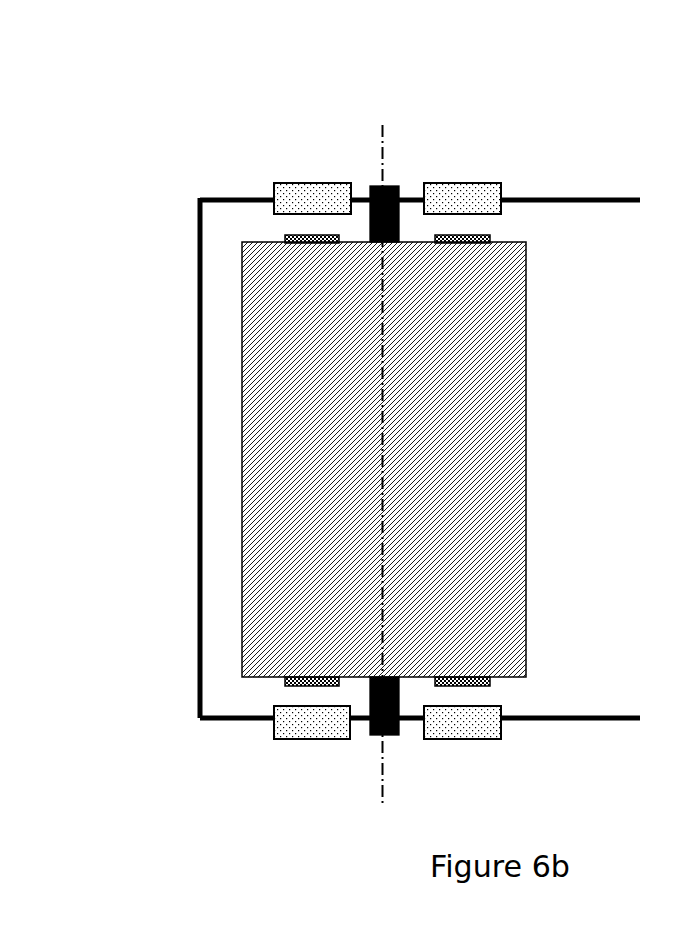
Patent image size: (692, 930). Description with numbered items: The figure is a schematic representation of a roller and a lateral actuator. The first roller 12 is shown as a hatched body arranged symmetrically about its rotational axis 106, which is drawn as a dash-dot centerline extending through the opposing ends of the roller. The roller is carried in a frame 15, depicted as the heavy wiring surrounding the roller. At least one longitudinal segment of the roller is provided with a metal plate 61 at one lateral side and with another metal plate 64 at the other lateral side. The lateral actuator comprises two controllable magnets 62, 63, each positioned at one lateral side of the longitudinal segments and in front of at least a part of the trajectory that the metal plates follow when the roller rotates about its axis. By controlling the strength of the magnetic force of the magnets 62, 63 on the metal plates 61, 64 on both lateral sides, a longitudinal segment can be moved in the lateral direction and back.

The first roller 12 is at (512, 340).
The frame 15 is at (598, 199).
The metal plate 61 is at (464, 676).
The controllable magnet 62 is at (305, 728).
The controllable magnet 63 is at (293, 189).
The metal plate 64 is at (290, 243).
The rotational axis 106 is at (383, 772).